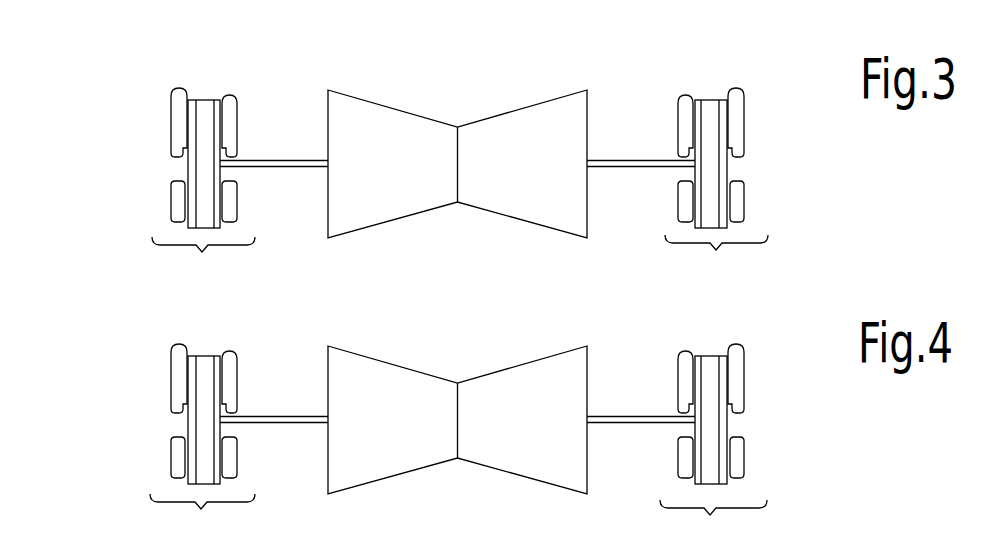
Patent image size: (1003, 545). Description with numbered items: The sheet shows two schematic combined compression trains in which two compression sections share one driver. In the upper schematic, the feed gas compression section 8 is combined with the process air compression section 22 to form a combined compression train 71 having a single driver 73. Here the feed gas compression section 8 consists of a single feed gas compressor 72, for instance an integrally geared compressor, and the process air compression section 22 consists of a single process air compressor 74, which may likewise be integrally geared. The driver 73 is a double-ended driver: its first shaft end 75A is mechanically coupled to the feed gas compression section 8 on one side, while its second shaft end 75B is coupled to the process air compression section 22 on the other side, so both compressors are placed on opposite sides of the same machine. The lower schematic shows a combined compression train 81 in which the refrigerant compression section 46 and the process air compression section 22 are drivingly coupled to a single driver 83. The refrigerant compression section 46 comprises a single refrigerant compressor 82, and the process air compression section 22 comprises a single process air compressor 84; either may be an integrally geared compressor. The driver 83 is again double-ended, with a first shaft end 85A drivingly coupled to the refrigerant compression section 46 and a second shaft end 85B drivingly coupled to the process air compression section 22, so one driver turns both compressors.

In FIG. 3, the combined compression train 71 is at (134, 86).
In FIG. 3, the feed gas compressor 72 is at (204, 113).
In FIG. 3, the driver 73 is at (395, 122).
In FIG. 3, the process air compressor 74 is at (708, 115).
In FIG. 3, the first shaft end 75A is at (282, 168).
In FIG. 3, the second shaft end 75B is at (640, 168).
In FIG. 3, the feed gas compression section 8 is at (203, 139).
In FIG. 3, the process air compression section 22 is at (716, 258).
In FIG. 4, the process air compression section 22 is at (713, 521).
In FIG. 3, the refrigerant compression section 46 is at (714, 7).
In FIG. 4, the refrigerant compression section 46 is at (202, 517).
In FIG. 4, the combined compression train 81 is at (138, 316).
In FIG. 4, the refrigerant compressor 82 is at (203, 370).
In FIG. 4, the driver 83 is at (395, 378).
In FIG. 4, the process air compressor 84 is at (708, 370).
In FIG. 4, the first shaft end 85A is at (273, 425).
In FIG. 4, the second shaft end 85B is at (640, 423).